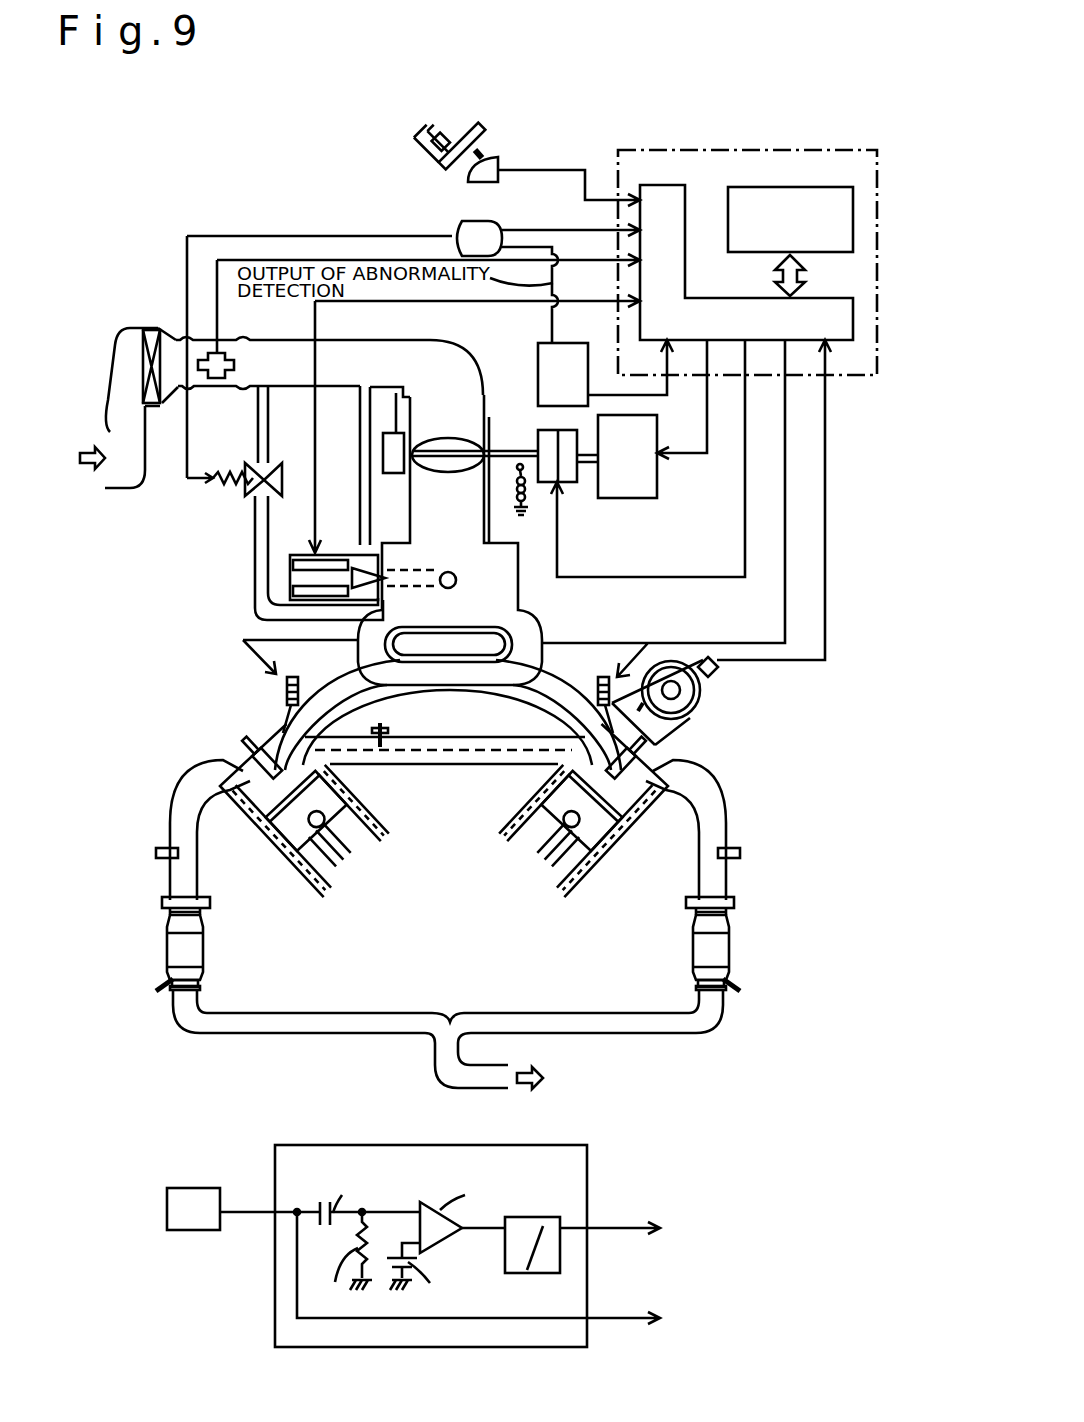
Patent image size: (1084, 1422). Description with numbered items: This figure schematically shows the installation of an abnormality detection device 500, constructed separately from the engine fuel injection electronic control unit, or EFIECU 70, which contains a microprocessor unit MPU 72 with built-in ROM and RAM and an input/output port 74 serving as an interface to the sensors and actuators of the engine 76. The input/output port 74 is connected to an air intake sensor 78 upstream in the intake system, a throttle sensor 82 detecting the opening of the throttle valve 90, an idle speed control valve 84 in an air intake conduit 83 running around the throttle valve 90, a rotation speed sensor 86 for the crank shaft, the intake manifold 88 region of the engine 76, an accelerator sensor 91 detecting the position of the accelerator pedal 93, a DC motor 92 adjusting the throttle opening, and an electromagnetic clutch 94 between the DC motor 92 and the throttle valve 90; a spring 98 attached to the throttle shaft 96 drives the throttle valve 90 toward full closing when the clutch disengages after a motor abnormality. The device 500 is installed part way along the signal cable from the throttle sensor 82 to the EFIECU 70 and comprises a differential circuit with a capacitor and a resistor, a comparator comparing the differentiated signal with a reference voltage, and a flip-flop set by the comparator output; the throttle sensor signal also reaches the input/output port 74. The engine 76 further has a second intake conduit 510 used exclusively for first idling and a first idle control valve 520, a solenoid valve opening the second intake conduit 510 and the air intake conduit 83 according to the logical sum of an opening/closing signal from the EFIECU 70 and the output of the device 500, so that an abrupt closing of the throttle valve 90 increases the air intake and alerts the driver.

The engine fuel injection electronic control unit (EFIECU) 70 is at (742, 152).
The microprocessor unit (MPU) 72 is at (728, 200).
The input/output port 74 is at (704, 298).
The engine 76 is at (142, 752).
The air intake sensor 78 is at (204, 379).
The throttle sensor 82 is at (392, 474).
The air intake conduit 83 is at (360, 478).
The idle speed control valve 84 is at (335, 545).
The rotation speed sensor 86 is at (715, 675).
The intake manifold 88 is at (508, 693).
The throttle valve 90 is at (455, 438).
The accelerator sensor 91 is at (485, 140).
The DC motor 92 is at (632, 498).
The accelerator pedal 93 is at (500, 160).
The electromagnetic clutch 94 is at (571, 484).
The shaft 96 is at (516, 463).
The spring 98 is at (529, 493).
The abnormality detection device 500 is at (537, 367).
The second intake conduit 510 is at (255, 587).
The first idle control valve 520 is at (230, 500).